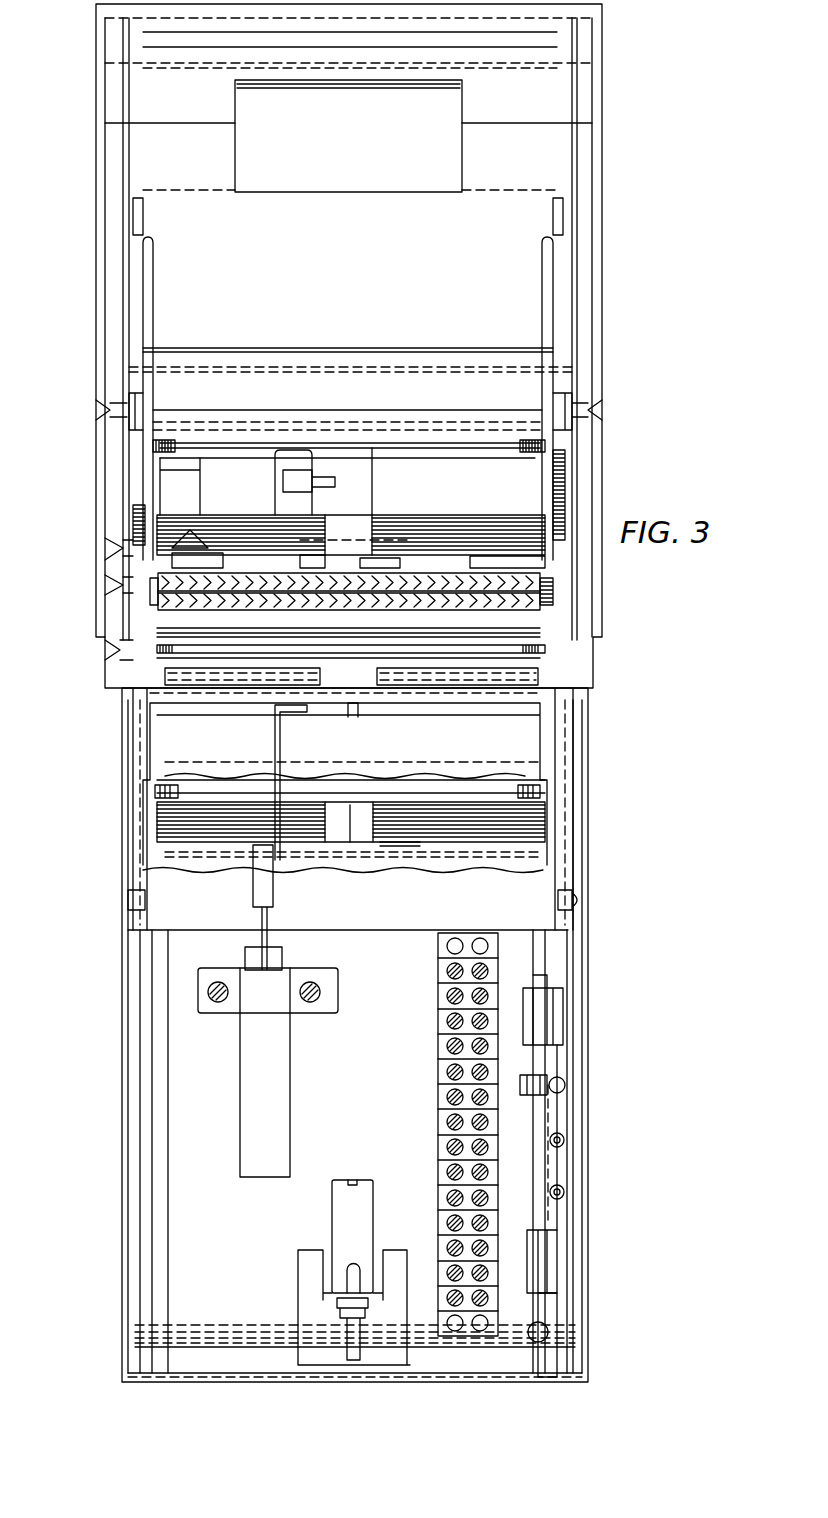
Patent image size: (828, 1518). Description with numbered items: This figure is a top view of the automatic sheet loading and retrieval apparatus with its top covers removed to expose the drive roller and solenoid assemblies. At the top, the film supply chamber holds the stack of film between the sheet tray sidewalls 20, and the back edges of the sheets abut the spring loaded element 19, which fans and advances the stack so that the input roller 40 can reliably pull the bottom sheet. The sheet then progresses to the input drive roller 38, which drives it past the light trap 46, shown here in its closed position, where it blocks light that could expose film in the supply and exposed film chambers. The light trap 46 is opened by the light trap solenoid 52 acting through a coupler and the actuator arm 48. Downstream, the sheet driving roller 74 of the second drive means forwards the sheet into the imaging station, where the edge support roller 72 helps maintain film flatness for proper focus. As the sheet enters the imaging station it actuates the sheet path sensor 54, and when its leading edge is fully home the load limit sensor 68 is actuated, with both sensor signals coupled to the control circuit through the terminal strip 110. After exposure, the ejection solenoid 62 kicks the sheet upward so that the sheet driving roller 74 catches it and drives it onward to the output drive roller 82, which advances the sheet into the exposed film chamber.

The spring loaded element 19 is at (462, 146).
The sheet tray sidewalls 20 is at (153, 302).
The output drive roller 82 is at (133, 553).
The input roller 40 is at (236, 520).
The input drive roller 38 is at (252, 606).
The light trap 46 is at (240, 710).
The actuator arm 48 is at (282, 738).
The edge support roller 72 is at (425, 855).
The sheet driving roller 74 is at (393, 846).
The light trap solenoid 52 is at (263, 1150).
The terminal strip 110 is at (440, 1093).
The ejection solenoid 62 is at (360, 1232).
The sheet path sensor 54 is at (525, 1012).
The load limit sensor 68 is at (530, 1255).